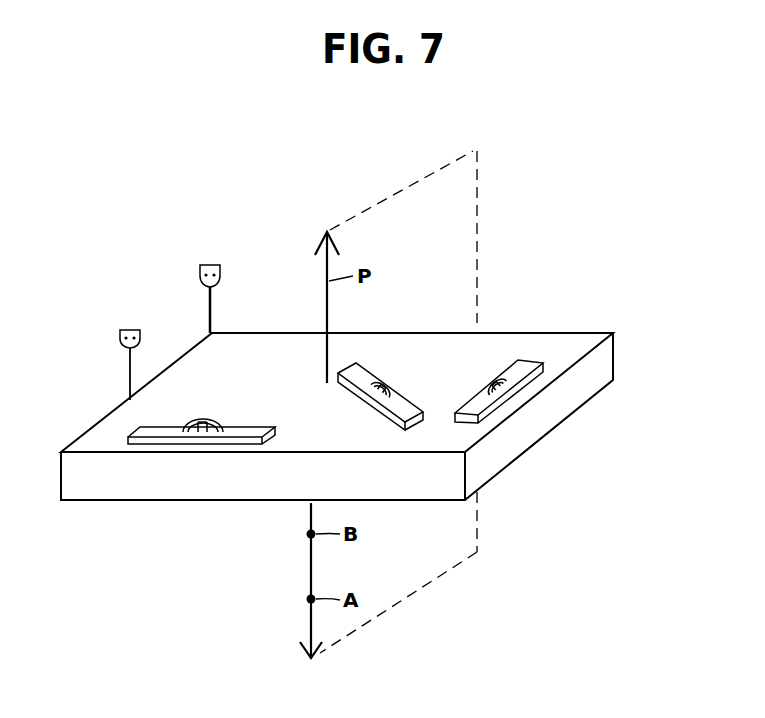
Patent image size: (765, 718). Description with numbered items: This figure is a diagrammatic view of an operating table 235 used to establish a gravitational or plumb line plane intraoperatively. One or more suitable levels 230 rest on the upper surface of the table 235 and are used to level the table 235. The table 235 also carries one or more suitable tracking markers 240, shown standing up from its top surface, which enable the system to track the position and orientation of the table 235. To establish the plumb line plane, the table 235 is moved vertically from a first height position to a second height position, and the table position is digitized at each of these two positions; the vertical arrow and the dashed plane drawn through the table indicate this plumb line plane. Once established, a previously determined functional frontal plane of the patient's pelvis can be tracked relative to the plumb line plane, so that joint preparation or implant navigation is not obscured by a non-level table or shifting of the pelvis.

The level 230 is at (137, 427).
The operating table 235 is at (533, 419).
The tracking marker 240 is at (211, 263).